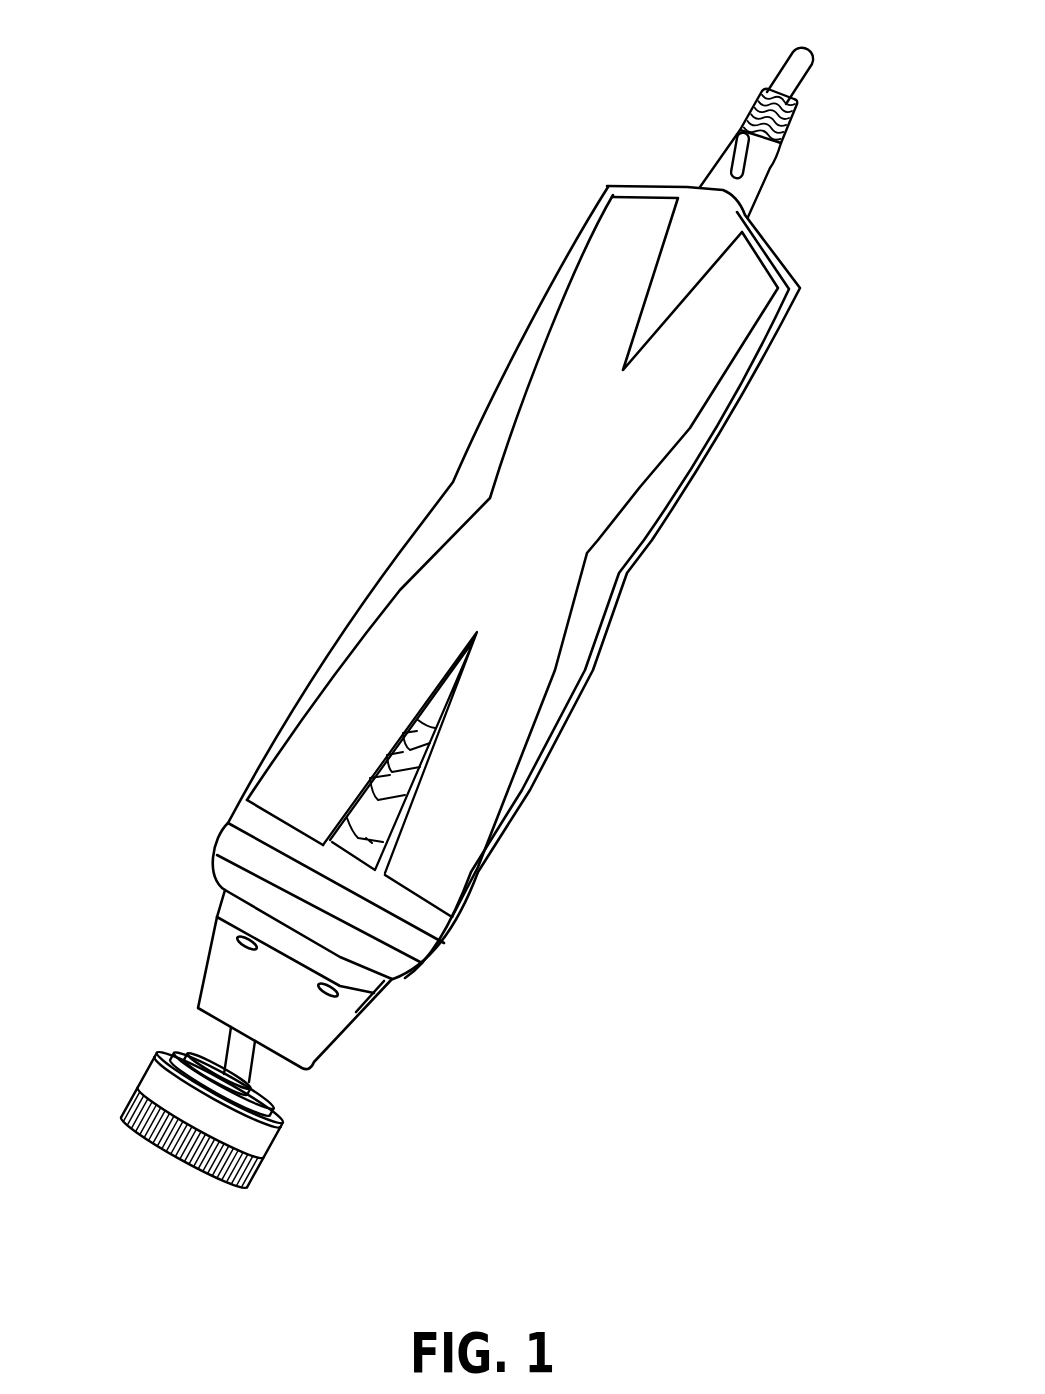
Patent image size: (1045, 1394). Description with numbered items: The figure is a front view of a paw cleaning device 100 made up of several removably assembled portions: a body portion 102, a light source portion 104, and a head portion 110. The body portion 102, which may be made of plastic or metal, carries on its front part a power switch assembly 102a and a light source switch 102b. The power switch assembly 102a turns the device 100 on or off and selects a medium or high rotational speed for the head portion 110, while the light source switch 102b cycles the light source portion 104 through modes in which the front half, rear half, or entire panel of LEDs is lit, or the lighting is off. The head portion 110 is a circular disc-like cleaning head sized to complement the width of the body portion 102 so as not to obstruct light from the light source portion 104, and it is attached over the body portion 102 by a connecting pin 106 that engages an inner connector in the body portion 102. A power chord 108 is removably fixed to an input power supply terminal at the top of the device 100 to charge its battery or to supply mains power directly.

The paw cleaning device 100 is at (197, 127).
The body portion 102 is at (658, 531).
The power switch assembly 102a is at (417, 757).
The light source switch 102b is at (370, 842).
The light source portion 104 is at (398, 975).
The connecting pin 106 is at (260, 1072).
The power chord 108 is at (768, 177).
The head portion 110 is at (182, 995).